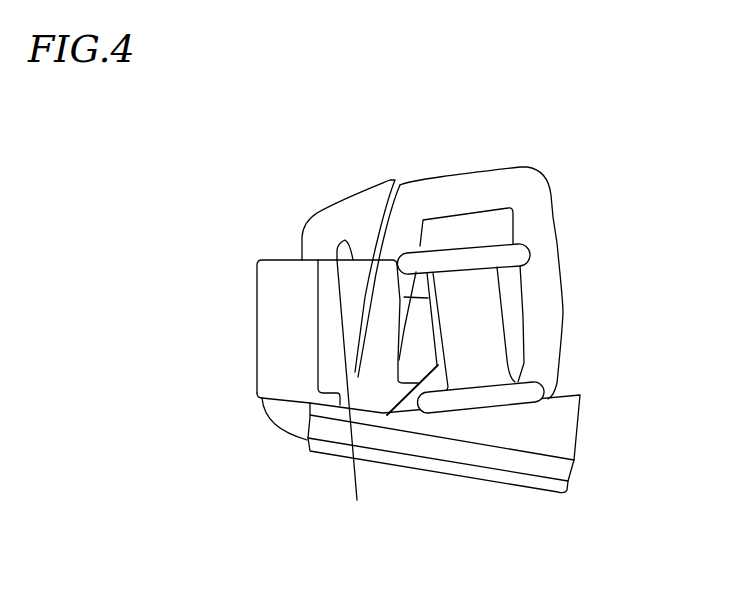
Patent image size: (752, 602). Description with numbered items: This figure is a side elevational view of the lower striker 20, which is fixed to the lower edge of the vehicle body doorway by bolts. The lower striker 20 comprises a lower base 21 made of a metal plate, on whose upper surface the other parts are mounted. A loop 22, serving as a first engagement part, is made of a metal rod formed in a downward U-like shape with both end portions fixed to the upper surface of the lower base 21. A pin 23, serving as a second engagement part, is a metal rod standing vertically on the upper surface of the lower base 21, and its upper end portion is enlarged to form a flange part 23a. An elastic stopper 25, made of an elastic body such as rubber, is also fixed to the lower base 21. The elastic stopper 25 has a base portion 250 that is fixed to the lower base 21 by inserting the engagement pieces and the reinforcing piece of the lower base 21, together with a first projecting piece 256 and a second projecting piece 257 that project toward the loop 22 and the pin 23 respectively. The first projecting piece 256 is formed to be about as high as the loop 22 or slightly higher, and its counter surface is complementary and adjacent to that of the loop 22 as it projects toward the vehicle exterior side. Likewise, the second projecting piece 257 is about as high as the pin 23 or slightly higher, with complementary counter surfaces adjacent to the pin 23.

The lower striker 20 is at (461, 168).
The lower base 21 is at (327, 453).
The loop 22 is at (522, 170).
The pin 23 is at (500, 317).
The flange part 23a is at (522, 257).
The elastic stopper 25 is at (254, 327).
The base portion 250 is at (270, 258).
The first projecting piece 256 is at (340, 198).
The second projecting piece 257 is at (359, 386).